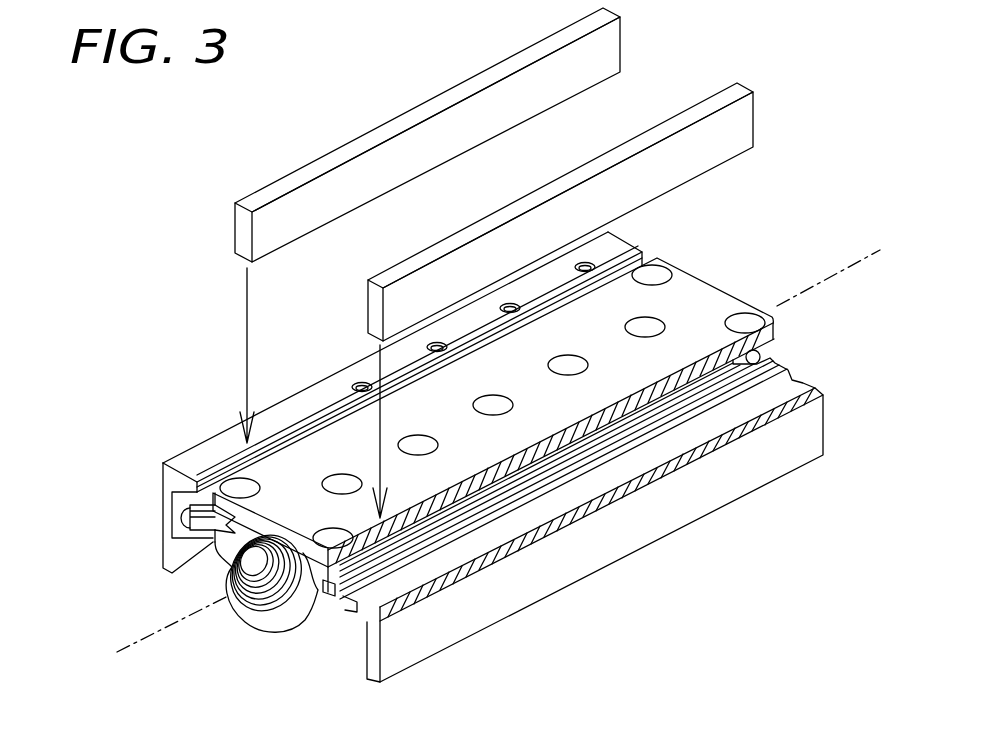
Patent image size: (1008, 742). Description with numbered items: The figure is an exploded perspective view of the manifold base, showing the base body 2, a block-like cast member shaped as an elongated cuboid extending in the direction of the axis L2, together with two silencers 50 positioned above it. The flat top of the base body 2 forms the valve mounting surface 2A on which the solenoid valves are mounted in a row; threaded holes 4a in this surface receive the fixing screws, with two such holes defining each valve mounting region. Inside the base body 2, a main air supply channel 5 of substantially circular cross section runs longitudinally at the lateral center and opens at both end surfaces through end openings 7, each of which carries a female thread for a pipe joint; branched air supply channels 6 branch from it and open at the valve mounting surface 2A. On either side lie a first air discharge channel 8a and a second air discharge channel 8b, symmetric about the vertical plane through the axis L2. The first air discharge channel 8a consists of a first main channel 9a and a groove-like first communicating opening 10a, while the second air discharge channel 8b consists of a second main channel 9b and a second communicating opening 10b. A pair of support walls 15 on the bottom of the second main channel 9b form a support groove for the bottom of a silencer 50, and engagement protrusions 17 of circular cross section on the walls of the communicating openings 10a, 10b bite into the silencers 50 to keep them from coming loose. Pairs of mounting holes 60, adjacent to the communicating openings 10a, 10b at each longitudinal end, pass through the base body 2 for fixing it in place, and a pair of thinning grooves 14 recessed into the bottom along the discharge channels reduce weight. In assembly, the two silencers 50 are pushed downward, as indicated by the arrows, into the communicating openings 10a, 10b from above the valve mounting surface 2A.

The base body 2 is at (667, 533).
The valve mounting surface 2A is at (703, 308).
The threaded holes 4a is at (285, 422).
The main air supply channel 5 is at (291, 582).
The branched air supply channels 6 is at (645, 326).
The end openings 7 is at (243, 588).
The first air discharge channel 8a is at (182, 503).
The second air discharge channel 8b is at (517, 505).
The first main channel 9a is at (200, 522).
The second main channel 9b is at (460, 548).
The first communicating opening 10a is at (197, 450).
The second communicating opening 10b is at (403, 543).
The thinning grooves 14 is at (199, 571).
The support walls 15 is at (345, 608).
The engagement protrusions 17 is at (345, 403).
The silencers 50 is at (603, 52).
The mounting holes 60 is at (770, 314).
The axis L2 is at (474, 467).